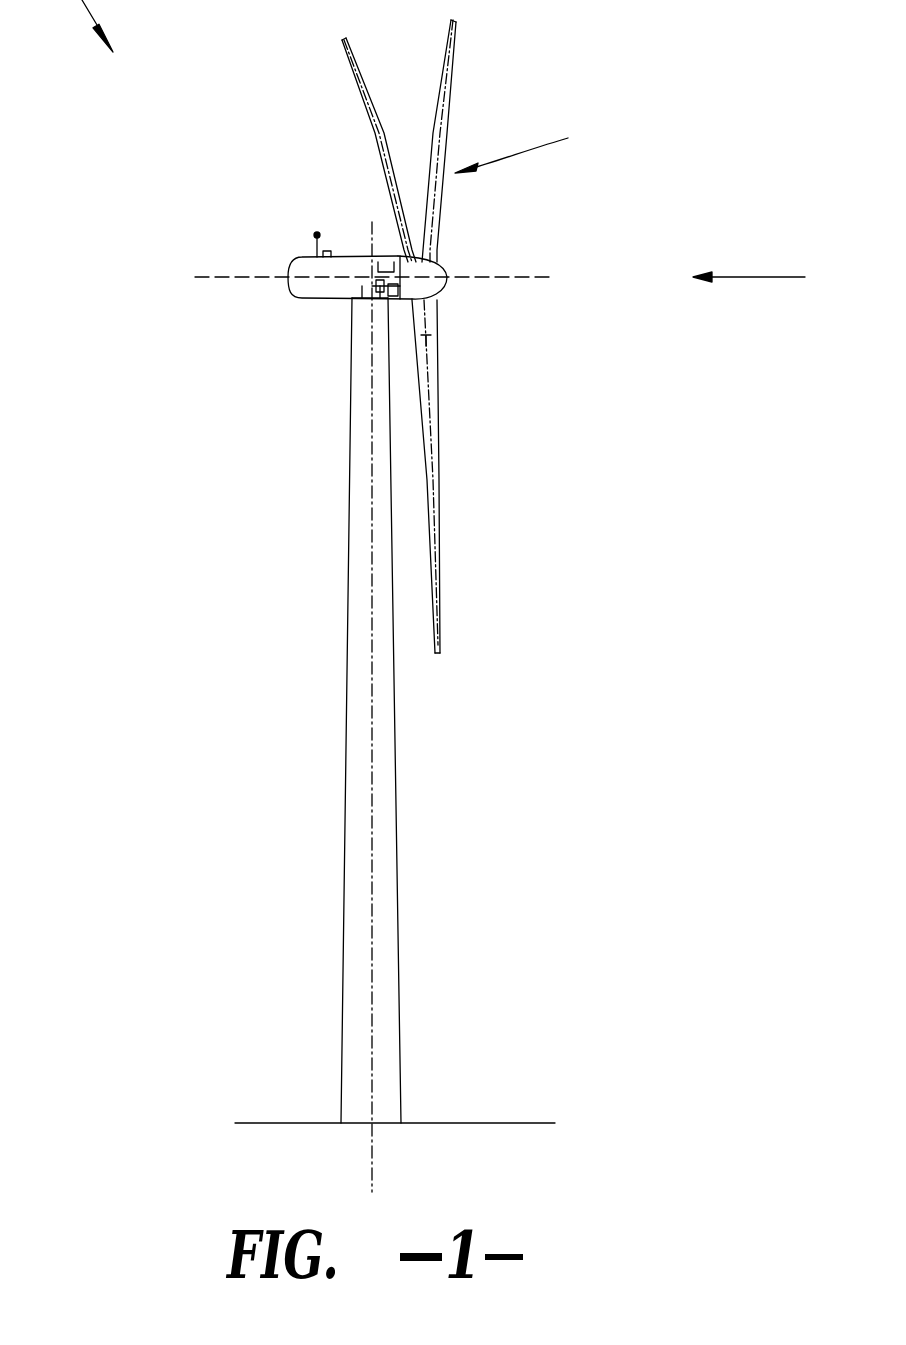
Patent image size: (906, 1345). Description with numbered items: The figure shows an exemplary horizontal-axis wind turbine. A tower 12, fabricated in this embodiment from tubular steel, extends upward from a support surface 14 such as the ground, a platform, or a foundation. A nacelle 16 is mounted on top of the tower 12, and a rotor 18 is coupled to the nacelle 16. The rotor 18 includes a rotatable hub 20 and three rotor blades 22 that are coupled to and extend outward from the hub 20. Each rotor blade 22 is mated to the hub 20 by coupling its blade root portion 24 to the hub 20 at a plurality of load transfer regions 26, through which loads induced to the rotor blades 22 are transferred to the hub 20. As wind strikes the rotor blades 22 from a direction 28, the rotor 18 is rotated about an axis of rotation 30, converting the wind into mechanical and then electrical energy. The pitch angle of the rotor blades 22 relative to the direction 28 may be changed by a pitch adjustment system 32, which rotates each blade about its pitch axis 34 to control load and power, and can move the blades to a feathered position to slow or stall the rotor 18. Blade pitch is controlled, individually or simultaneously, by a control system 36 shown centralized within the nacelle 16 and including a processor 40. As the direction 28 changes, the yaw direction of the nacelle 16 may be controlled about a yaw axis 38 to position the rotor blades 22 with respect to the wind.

The tower 12 is at (344, 880).
The support surface 14 is at (297, 1122).
The nacelle 16 is at (326, 300).
The rotor 18 is at (529, 145).
The rotatable hub 20 is at (442, 266).
The rotor blade 22 is at (366, 116).
The blade root portion 24 is at (438, 390).
The load transfer region 26 is at (416, 303).
The direction 28 is at (768, 275).
The axis of rotation 30 is at (522, 280).
The pitch adjustment system 32 is at (428, 337).
The pitch axis 34 is at (340, 44).
The control system 36 is at (370, 323).
The yaw axis 38 is at (374, 758).
The processor 40 is at (384, 226).